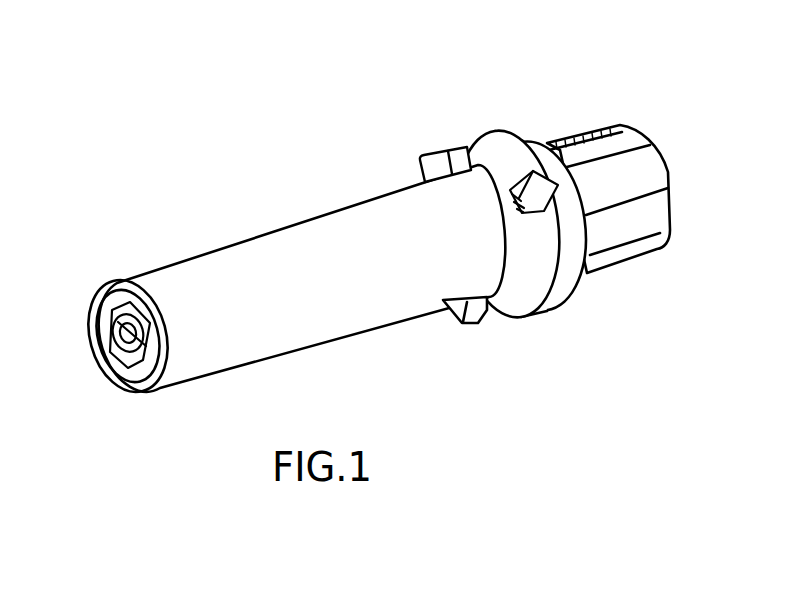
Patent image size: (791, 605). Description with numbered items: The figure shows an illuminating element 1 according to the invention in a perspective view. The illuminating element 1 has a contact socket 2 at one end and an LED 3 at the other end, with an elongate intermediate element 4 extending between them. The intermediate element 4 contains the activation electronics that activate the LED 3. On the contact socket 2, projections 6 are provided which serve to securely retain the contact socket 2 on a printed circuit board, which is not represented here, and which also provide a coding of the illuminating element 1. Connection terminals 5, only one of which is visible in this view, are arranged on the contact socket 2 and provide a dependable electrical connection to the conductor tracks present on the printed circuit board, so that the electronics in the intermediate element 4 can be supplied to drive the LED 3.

The illuminating element 1 is at (360, 230).
The contact socket 2 is at (524, 87).
The LED 3 is at (115, 323).
The intermediate element 4 is at (305, 243).
The connection terminals 5 is at (532, 182).
The projections 6 is at (440, 163).